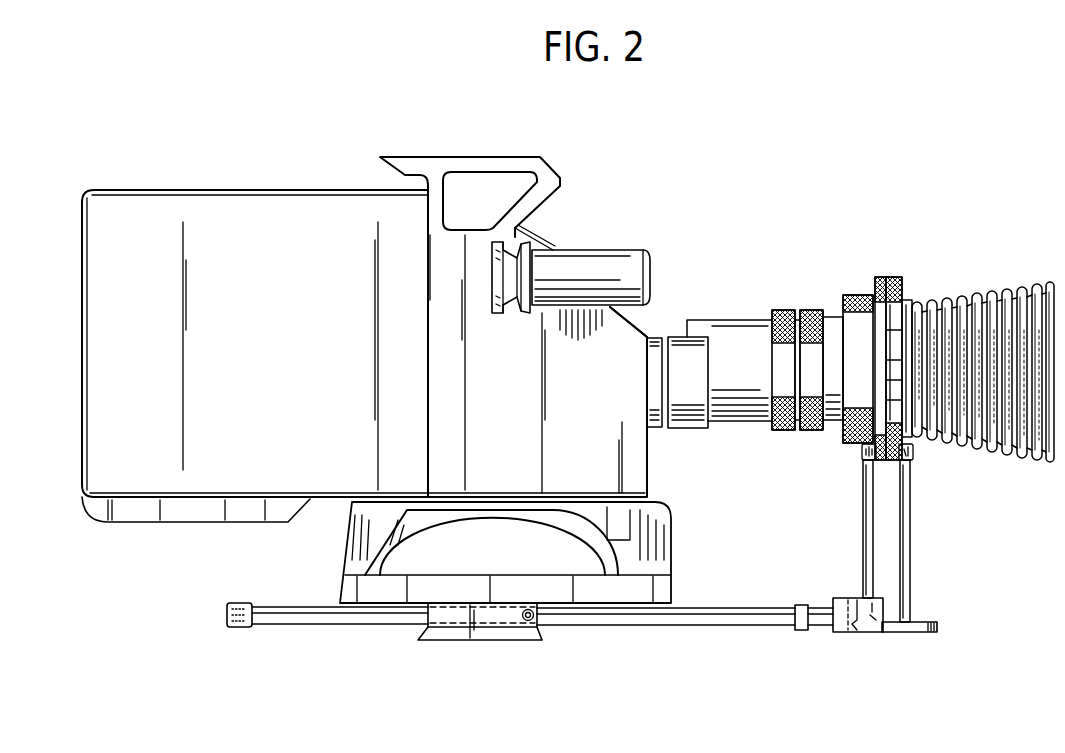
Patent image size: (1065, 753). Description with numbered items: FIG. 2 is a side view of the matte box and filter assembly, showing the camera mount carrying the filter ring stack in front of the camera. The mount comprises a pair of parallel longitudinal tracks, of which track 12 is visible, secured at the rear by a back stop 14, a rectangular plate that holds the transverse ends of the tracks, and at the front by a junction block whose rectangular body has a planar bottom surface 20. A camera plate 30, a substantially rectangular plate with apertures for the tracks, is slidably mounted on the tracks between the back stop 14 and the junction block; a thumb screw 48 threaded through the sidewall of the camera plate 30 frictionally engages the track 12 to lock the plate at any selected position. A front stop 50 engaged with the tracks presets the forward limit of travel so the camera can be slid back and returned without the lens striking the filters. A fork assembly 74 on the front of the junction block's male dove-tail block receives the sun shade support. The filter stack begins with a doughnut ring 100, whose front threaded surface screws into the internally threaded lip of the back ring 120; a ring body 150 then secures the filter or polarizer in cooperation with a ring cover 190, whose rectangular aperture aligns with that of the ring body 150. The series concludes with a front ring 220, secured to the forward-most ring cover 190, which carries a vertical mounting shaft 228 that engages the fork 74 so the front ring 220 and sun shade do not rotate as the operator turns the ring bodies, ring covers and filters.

The track 12 is at (333, 621).
The back stop 14 is at (232, 628).
The planar bottom surface 20 is at (853, 633).
The camera plate 30 is at (485, 641).
The thumb screw 48 is at (542, 620).
The front stop 50 is at (800, 631).
The fork assembly 74 is at (925, 633).
The doughnut ring 100 is at (848, 296).
The back ring 120 is at (866, 296).
The ring body 150 is at (878, 300).
The ring cover 190 is at (895, 298).
The front ring 220 is at (905, 300).
The vertical mounting shaft 228 is at (912, 535).